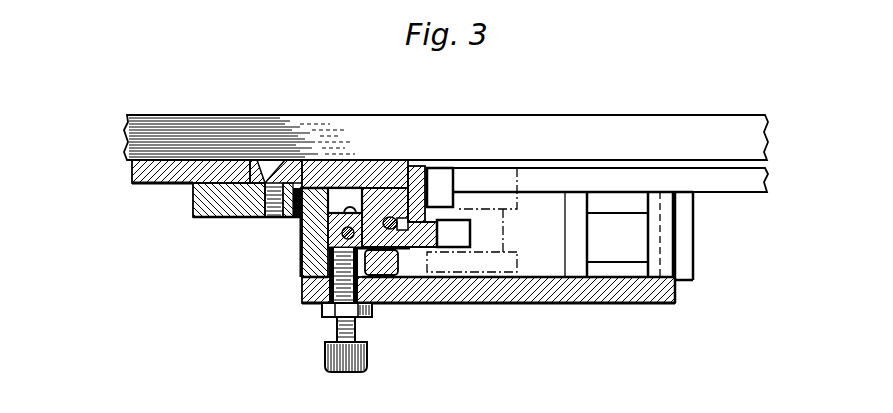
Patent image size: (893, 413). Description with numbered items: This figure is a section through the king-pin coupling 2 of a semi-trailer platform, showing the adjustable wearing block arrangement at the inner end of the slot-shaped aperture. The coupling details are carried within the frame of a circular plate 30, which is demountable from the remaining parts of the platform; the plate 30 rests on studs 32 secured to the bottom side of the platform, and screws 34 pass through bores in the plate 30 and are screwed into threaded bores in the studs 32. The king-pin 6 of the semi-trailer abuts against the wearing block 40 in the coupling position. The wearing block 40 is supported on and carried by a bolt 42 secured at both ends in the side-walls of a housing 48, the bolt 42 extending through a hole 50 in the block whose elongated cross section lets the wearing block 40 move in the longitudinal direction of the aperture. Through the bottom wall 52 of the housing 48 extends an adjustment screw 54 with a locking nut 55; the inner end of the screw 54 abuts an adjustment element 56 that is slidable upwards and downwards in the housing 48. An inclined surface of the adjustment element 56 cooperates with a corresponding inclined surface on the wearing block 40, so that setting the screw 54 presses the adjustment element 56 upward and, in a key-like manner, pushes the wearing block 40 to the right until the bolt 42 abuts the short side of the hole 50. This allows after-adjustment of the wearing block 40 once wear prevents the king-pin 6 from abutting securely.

The coupling 2 is at (186, 128).
The circular plate 30 is at (312, 177).
The studs 32 is at (229, 200).
The screws 34 is at (271, 206).
The wearing block 40 is at (419, 184).
The bolt 42 is at (410, 234).
The housing 48 is at (309, 248).
The hole 50 is at (413, 249).
The bottom wall 52 is at (556, 294).
The adjustment screw 54 is at (338, 331).
The locking nut 55 is at (371, 307).
The adjustment element 56 is at (335, 216).
The king-pin 6 is at (483, 243).